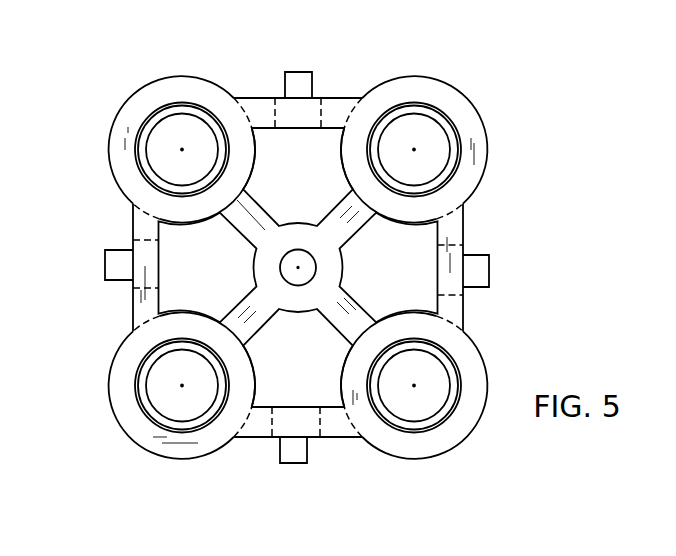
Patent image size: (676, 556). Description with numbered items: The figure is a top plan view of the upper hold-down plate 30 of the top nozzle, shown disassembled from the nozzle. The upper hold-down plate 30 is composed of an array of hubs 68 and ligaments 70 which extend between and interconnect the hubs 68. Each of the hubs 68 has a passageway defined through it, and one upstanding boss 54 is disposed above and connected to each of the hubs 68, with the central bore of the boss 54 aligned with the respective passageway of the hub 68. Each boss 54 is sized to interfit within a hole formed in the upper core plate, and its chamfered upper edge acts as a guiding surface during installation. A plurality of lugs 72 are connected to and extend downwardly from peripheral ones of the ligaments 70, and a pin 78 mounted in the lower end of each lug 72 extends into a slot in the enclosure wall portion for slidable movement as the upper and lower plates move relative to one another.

The upper hold-down plate 30 is at (480, 88).
The upstanding boss 54 is at (172, 102).
The hub 68 is at (341, 153).
The ligament 70 is at (257, 110).
The lug 72 is at (343, 110).
The pin 78 is at (302, 80).